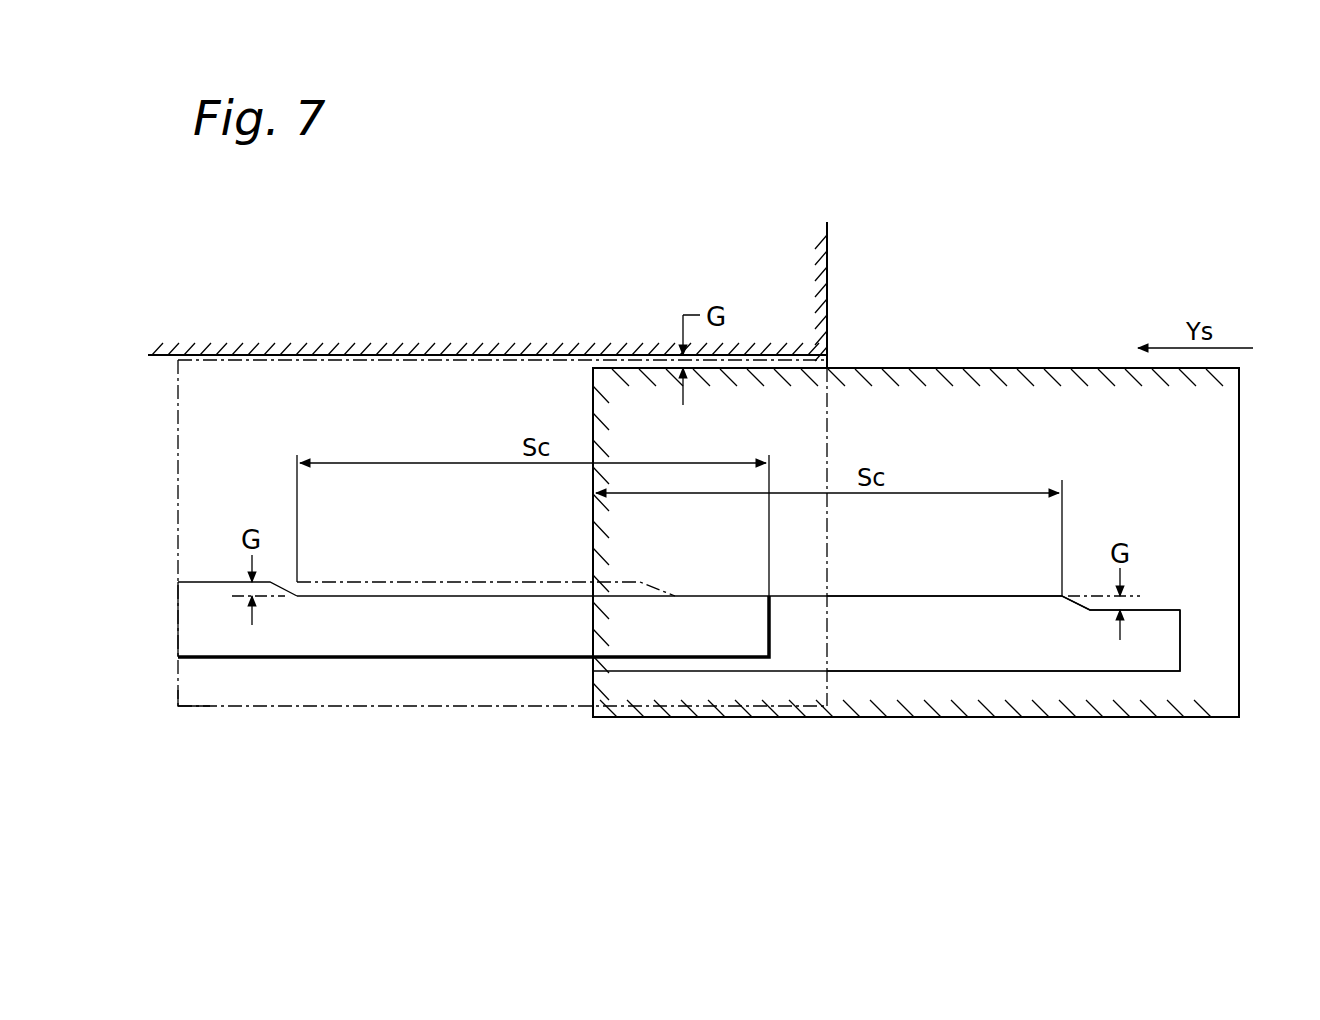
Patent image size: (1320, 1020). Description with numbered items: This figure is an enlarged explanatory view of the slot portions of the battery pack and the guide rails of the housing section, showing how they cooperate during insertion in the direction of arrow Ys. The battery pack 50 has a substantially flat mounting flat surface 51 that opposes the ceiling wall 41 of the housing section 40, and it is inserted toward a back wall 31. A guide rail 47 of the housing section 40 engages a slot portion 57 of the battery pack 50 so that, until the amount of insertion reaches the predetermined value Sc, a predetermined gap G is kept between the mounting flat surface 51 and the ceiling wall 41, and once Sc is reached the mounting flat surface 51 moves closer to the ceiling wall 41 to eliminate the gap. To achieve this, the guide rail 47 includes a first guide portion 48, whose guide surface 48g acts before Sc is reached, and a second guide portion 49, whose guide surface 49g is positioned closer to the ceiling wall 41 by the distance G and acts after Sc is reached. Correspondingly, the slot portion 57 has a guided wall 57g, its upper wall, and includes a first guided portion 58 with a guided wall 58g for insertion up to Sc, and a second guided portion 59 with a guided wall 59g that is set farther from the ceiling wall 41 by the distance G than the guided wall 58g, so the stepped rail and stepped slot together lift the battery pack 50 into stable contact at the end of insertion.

The wall 31 is at (838, 285).
The housing section 40 is at (497, 384).
The ceiling wall 41 is at (395, 372).
The guide rail 47 is at (375, 645).
The first guide portion 48 is at (520, 638).
The guide surface of first guide portion 48g is at (540, 596).
The second guide portion 49 is at (228, 637).
The guide surface of second guide portion 49g is at (224, 582).
The battery pack 50 is at (938, 360).
The mounting flat surface 51 is at (271, 355).
The slot portion 57 is at (350, 585).
The guided wall 57g is at (380, 580).
The first guided portion 58 is at (852, 635).
The guided wall of first guided portion 58g is at (866, 596).
The second guided portion 59 is at (1100, 640).
The guided wall of second guided portion 59g is at (1150, 608).